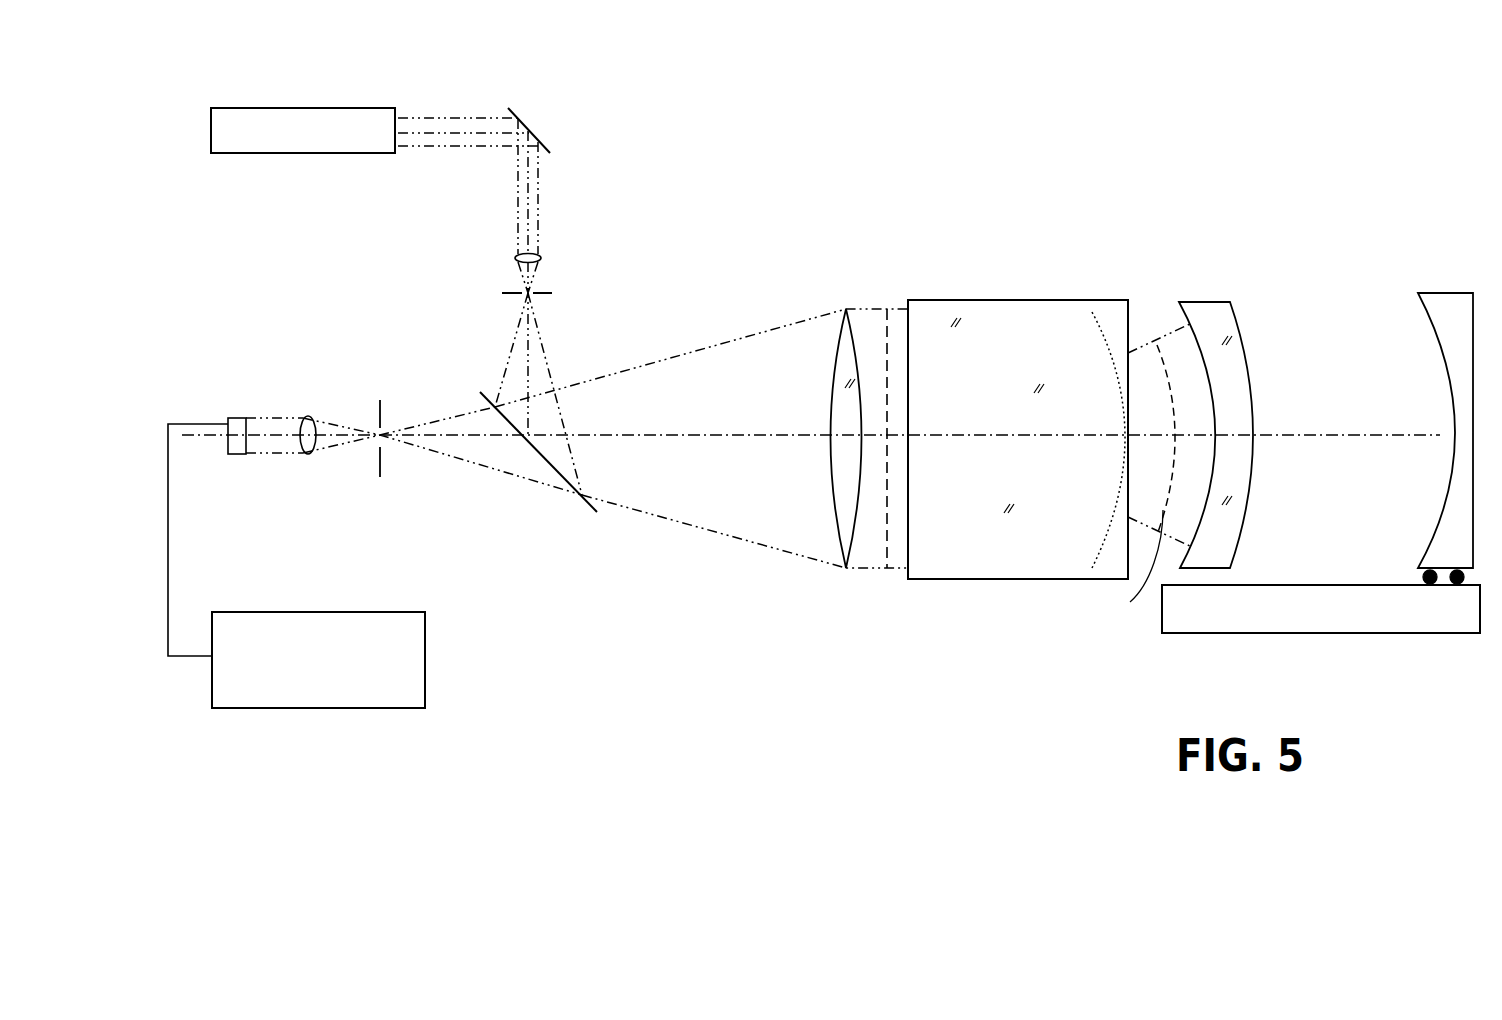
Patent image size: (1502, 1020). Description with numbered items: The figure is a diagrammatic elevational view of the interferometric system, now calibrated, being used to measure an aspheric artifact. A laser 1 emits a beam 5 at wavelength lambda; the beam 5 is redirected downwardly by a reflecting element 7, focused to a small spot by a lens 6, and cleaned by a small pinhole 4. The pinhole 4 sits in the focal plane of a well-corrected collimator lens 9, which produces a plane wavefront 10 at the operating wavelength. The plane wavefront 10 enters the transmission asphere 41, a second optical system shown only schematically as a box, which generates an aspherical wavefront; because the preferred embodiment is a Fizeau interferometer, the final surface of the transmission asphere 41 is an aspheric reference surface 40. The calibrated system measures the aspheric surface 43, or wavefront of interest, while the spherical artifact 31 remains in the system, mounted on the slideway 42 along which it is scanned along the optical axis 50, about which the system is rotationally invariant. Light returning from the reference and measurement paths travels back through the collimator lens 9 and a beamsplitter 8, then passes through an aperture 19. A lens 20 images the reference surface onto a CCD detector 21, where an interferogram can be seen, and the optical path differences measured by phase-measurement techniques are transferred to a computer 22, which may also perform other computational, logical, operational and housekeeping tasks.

The laser 1 is at (360, 130).
The beam 5 is at (450, 120).
The reflecting element 7 is at (538, 137).
The lens 6 is at (543, 257).
The pinhole 4 is at (503, 294).
The beamsplitter 8 is at (560, 477).
The aperture 19 is at (378, 453).
The lens 20 is at (307, 447).
The CCD detector 21 is at (232, 455).
The computer 22 is at (305, 673).
The collimator lens 9 is at (847, 308).
The plane wavefront 10 is at (887, 328).
The transmission asphere 41 is at (998, 342).
The aspheric reference surface 40 is at (1107, 518).
The aspheric surface 43 is at (1203, 315).
The spherical artifact 31 is at (1448, 302).
The slideway 42 is at (1307, 622).
The optical axis 50 is at (1310, 435).